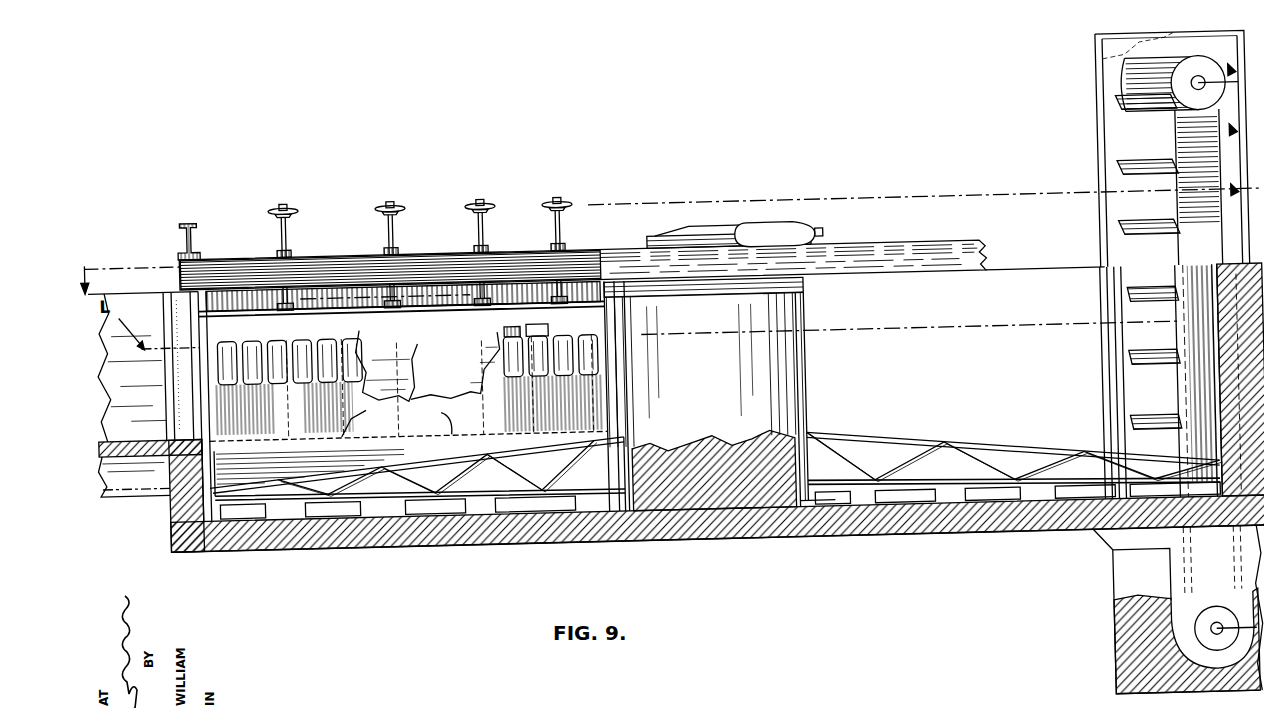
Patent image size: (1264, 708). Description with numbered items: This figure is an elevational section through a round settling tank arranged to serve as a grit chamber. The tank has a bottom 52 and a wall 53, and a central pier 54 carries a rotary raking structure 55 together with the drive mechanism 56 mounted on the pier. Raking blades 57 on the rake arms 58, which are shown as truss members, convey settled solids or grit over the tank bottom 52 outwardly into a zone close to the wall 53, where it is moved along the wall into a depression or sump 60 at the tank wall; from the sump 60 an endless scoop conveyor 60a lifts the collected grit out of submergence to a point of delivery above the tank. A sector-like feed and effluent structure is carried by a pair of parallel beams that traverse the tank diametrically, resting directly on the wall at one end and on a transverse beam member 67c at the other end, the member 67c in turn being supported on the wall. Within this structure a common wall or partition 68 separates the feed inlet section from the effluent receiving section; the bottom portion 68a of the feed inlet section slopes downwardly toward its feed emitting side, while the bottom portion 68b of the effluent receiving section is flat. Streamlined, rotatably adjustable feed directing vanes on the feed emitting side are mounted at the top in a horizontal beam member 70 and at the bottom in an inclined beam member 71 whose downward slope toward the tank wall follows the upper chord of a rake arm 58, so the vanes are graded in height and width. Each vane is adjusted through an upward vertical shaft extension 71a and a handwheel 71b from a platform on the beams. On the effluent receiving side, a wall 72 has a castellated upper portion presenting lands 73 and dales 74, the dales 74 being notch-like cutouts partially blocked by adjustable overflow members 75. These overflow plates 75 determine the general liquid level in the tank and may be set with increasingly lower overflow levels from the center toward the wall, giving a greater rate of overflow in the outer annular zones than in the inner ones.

The bottom 52 is at (873, 552).
The wall 53 is at (1052, 288).
The central pier 54 is at (706, 394).
The rotary raking structure 55 is at (160, 466).
The drive mechanism 56 is at (735, 237).
The raking blades 57 is at (912, 512).
The rake arms 58 is at (885, 452).
The sump 60 is at (1165, 623).
The endless scoop conveyor 60a is at (1123, 200).
The transverse beam member 67c is at (186, 226).
The common wall or partition 68 is at (422, 408).
The bottom portion of the feed inlet section 68a is at (350, 414).
The bottom portion of the effluent receiving section 68b is at (432, 421).
The horizontal beam member 70 is at (457, 319).
The inclined beam member 71 is at (441, 446).
The upward vertical shaft extension 71a is at (582, 215).
The handwheel 71b is at (292, 209).
The wall 72 is at (407, 386).
The lands 73 is at (538, 333).
The dales 74 is at (511, 335).
The adjustable overflow members 75 is at (408, 376).